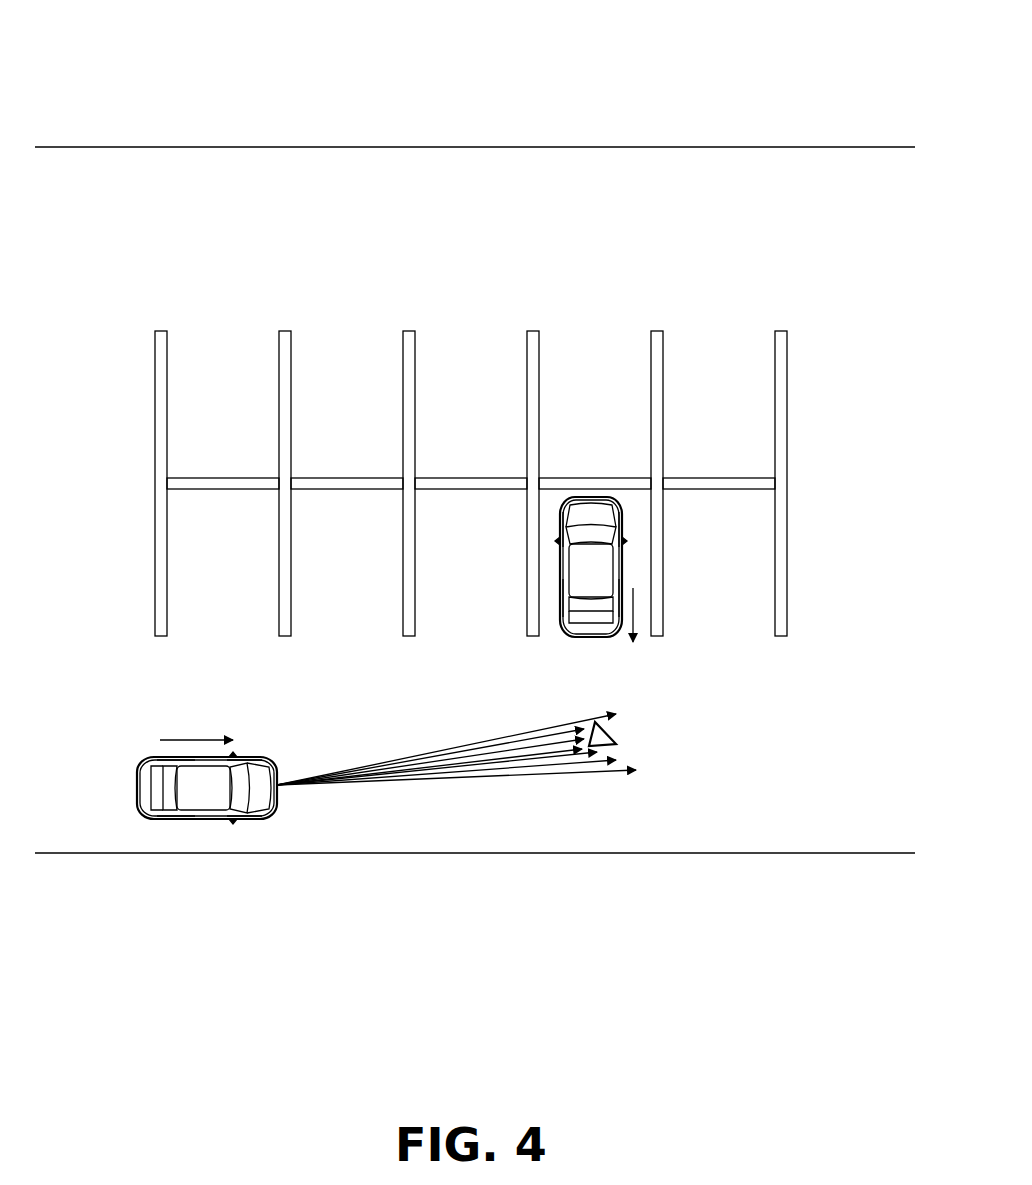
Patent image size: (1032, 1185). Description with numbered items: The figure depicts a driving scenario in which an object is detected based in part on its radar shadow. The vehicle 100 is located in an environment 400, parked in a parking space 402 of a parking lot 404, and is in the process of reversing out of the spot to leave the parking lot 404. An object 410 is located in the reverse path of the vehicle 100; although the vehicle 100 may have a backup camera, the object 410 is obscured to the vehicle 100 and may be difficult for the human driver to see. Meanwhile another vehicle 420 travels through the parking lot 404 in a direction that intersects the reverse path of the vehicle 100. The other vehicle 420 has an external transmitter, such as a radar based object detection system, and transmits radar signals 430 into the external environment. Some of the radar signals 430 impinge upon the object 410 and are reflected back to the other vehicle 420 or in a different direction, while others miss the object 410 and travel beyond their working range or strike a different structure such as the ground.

The environment 400 is at (268, 103).
The parking lot 404 is at (852, 393).
The parking space 402 is at (627, 506).
The vehicle 100 is at (586, 507).
The other vehicle 420 is at (190, 820).
The radar signals 430 is at (482, 781).
The object 410 is at (620, 733).